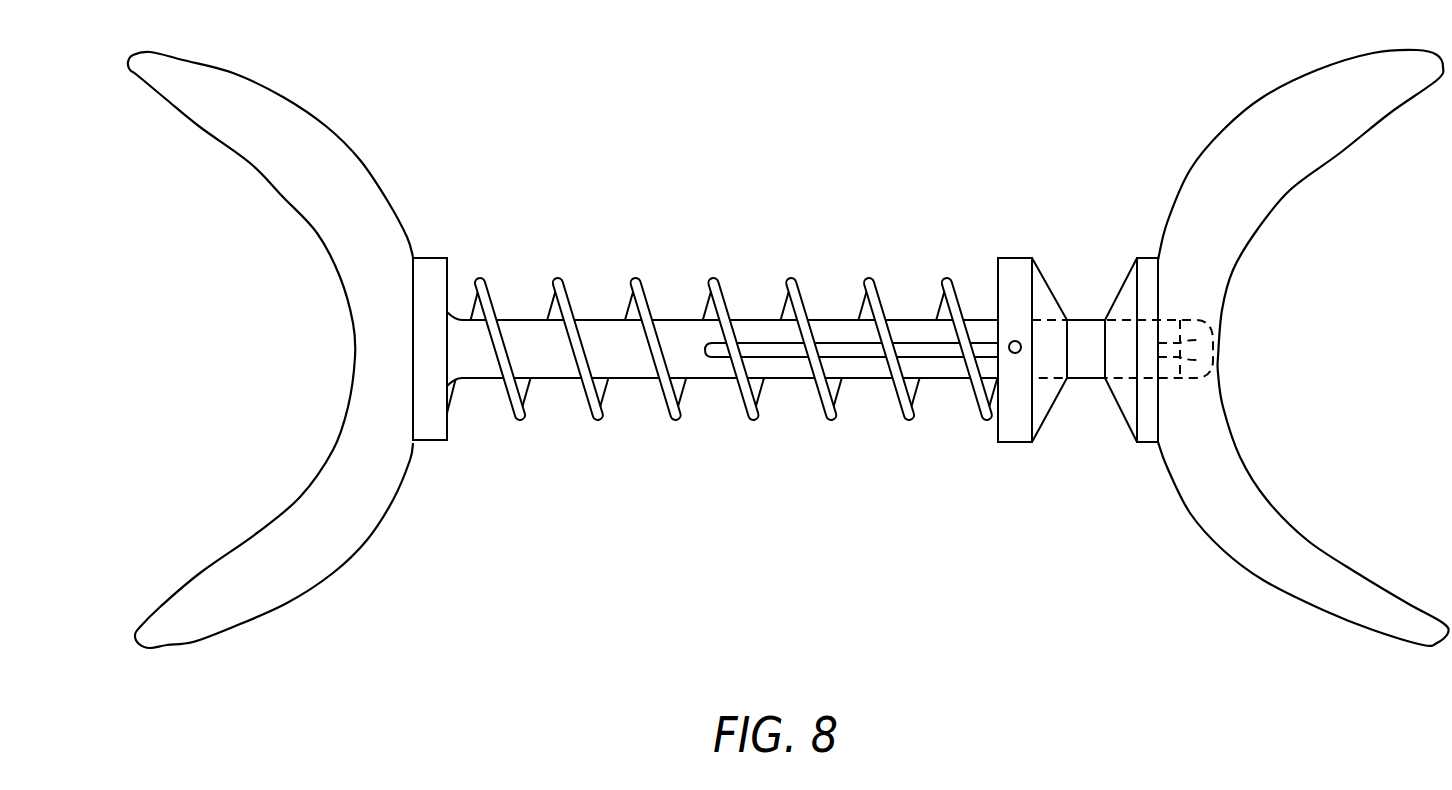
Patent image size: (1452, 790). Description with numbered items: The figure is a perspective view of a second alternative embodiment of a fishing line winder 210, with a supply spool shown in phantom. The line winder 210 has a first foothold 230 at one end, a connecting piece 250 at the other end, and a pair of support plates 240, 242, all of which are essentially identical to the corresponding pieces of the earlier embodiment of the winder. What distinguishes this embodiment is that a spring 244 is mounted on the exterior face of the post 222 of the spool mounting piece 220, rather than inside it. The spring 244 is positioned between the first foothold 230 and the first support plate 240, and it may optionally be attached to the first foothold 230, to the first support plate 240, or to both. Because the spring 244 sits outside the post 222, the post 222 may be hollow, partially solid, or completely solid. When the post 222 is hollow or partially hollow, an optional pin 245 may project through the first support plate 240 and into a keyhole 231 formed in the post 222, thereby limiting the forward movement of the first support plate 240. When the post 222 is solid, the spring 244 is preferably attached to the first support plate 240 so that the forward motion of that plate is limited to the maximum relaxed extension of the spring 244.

The fishing line winder 210 is at (958, 206).
The spool mounting piece 220 is at (735, 332).
The post 222 is at (555, 360).
The first foothold 230 is at (290, 588).
The keyhole 231 is at (847, 350).
The first support plate 240 is at (1020, 258).
The second support plate 242 is at (1132, 277).
The spring 244 is at (672, 418).
The pin 245 is at (1017, 353).
The connecting piece 250 is at (1305, 593).